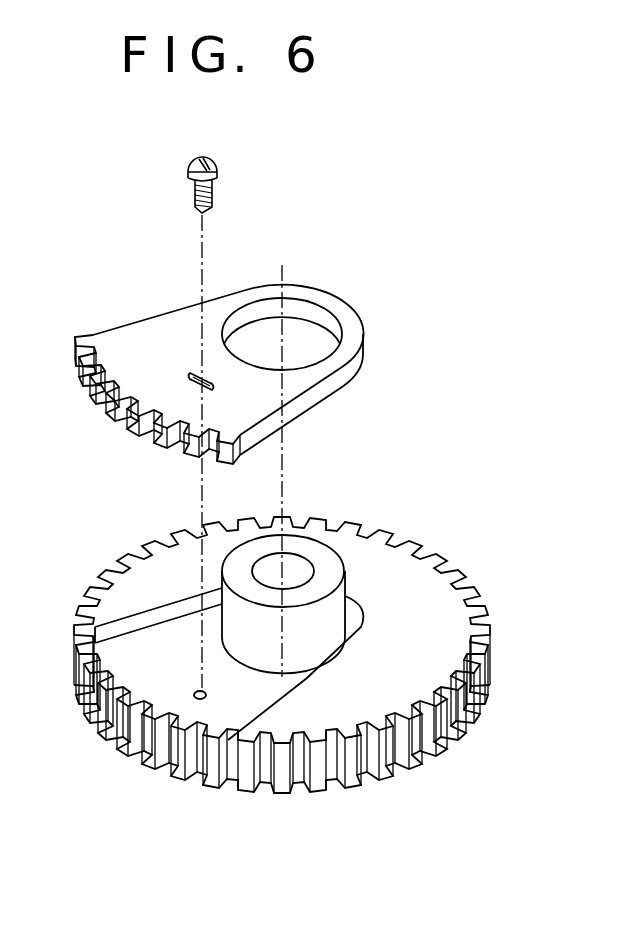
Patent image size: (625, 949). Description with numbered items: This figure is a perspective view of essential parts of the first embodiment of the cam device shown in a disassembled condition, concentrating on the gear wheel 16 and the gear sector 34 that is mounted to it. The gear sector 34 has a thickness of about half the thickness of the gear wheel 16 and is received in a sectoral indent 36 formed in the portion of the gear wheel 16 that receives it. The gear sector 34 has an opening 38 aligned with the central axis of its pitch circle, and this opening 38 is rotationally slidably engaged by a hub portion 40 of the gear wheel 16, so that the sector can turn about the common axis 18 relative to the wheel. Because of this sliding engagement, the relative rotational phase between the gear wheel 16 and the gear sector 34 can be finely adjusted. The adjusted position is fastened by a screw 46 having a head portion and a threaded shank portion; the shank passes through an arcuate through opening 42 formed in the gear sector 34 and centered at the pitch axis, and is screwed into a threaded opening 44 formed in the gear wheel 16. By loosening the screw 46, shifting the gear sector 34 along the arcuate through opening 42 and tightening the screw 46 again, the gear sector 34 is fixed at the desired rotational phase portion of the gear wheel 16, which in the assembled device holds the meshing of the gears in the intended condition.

The gear wheel 16 is at (470, 583).
The axis of rotation 18 is at (287, 478).
The gear sector 34 is at (307, 402).
The sectoral indent 36 is at (138, 653).
The opening 38 is at (300, 328).
The hub portion 40 is at (337, 606).
The arcuate through opening 42 is at (190, 375).
The threaded opening 44 is at (194, 695).
The screw 46 is at (217, 172).